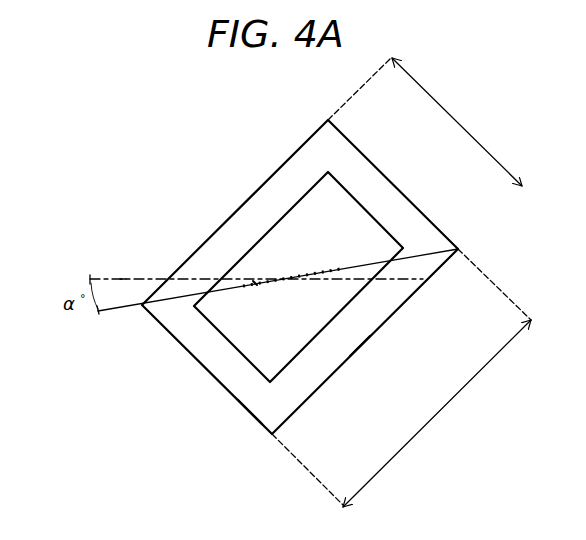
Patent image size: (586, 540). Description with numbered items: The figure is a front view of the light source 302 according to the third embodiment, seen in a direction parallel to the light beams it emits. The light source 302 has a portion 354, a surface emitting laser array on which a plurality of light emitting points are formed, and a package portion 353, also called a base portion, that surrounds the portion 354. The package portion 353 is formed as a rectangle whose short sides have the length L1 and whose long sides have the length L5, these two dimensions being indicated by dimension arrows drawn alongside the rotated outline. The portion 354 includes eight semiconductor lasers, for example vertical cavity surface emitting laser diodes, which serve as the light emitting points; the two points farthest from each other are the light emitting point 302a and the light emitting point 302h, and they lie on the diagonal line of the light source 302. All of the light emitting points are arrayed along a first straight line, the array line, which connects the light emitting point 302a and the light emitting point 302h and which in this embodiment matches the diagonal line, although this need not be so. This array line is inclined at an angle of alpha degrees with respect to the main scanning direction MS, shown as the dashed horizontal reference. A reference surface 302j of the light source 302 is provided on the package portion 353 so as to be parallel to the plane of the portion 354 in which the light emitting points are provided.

The light source 302 is at (391, 178).
The light emitting point 302h is at (338, 271).
The light emitting point 302a is at (255, 283).
The reference surface 302j is at (333, 355).
The portion (surface emitting laser array) 354 is at (238, 335).
The package portion (base portion) 353 is at (252, 397).
The main scanning direction MS is at (123, 278).
The length of short sides L1 is at (457, 122).
The length of long sides L5 is at (437, 413).